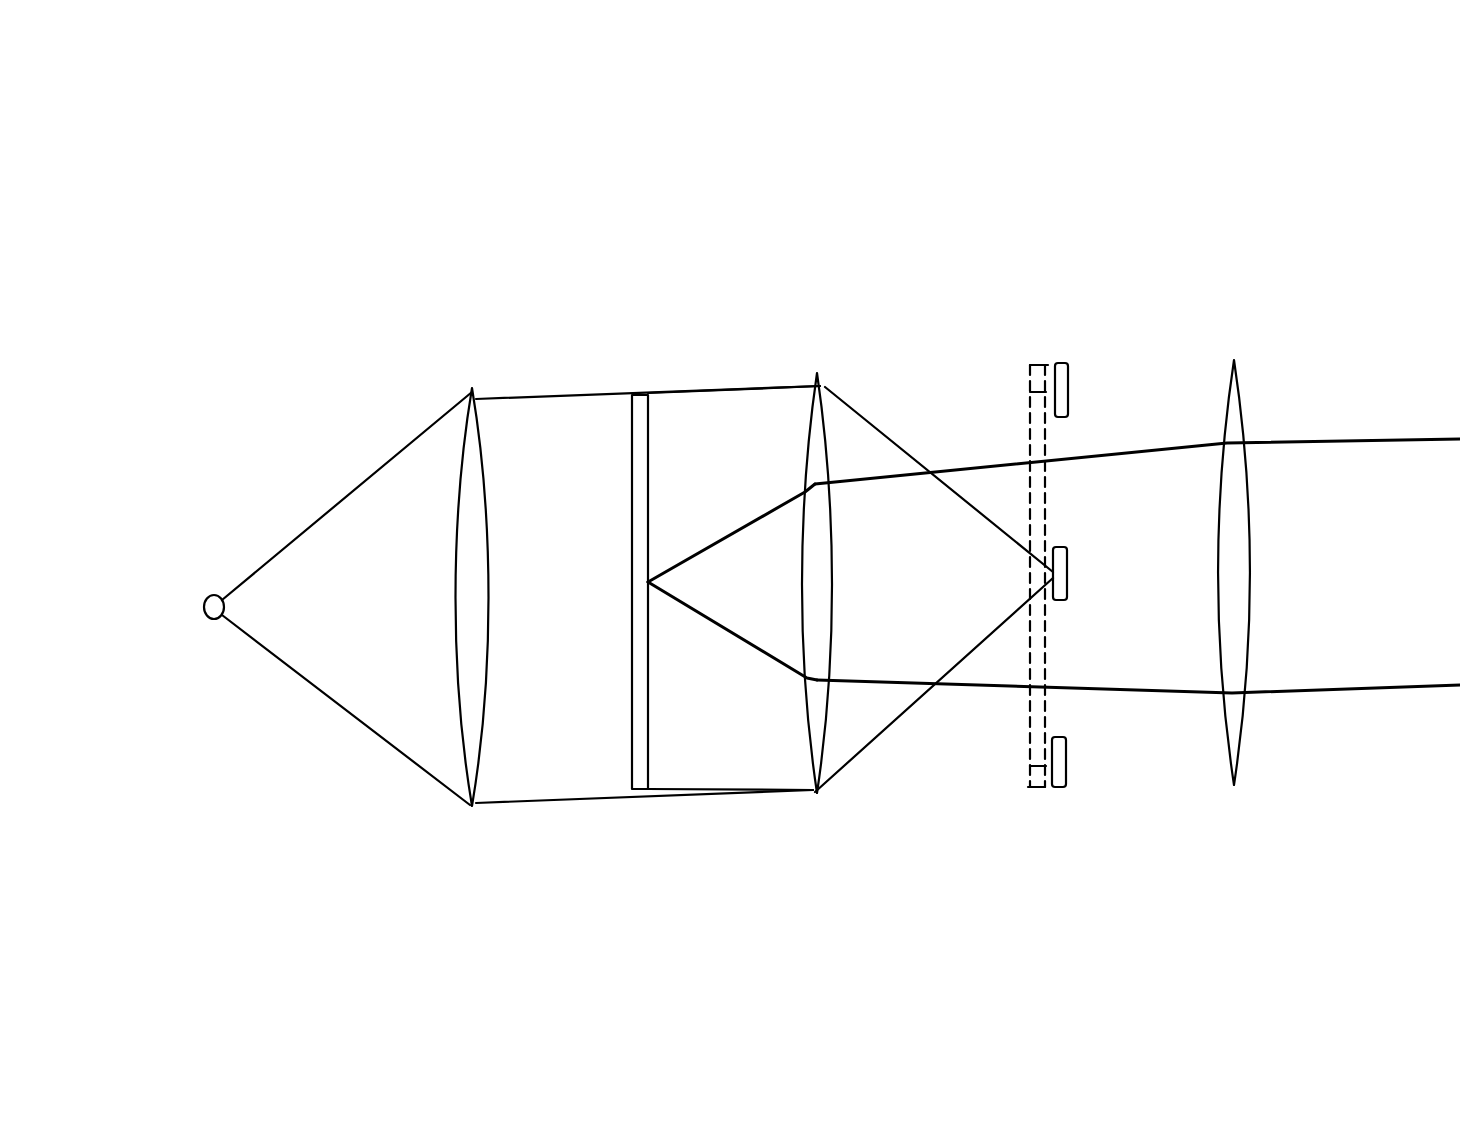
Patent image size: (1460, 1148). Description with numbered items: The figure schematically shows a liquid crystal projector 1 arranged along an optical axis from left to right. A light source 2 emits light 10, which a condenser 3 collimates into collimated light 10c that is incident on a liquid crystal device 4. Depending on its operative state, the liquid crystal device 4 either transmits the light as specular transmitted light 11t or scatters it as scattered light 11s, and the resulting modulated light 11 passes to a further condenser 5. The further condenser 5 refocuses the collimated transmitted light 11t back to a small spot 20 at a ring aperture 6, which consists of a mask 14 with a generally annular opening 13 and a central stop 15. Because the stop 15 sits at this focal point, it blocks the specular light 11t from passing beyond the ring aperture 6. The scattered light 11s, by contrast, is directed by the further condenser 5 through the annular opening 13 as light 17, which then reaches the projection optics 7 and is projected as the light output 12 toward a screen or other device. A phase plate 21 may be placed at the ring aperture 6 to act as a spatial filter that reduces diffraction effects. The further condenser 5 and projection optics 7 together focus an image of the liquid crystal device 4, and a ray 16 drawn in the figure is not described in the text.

The projector 1 is at (438, 219).
The light source 2 is at (208, 596).
The condenser 3 is at (478, 390).
The liquid crystal device 4 is at (640, 393).
The further condenser 5 is at (822, 374).
The ring aperture 6 is at (1052, 362).
The projection optics 7 is at (1243, 380).
The light 10 is at (370, 737).
The collimated light 10c is at (533, 800).
The modulated light 11 is at (675, 800).
The scattered light 11s is at (752, 522).
The transmitted light 11t is at (756, 760).
The light output 12 is at (1345, 440).
The annular opening 13 is at (1014, 707).
The mask 14 is at (1050, 392).
The stop 15 is at (1068, 585).
The specular light ray 16 is at (984, 642).
The light 17 is at (1110, 703).
The small spot 20 is at (1012, 572).
The phase plate 21 is at (1028, 788).